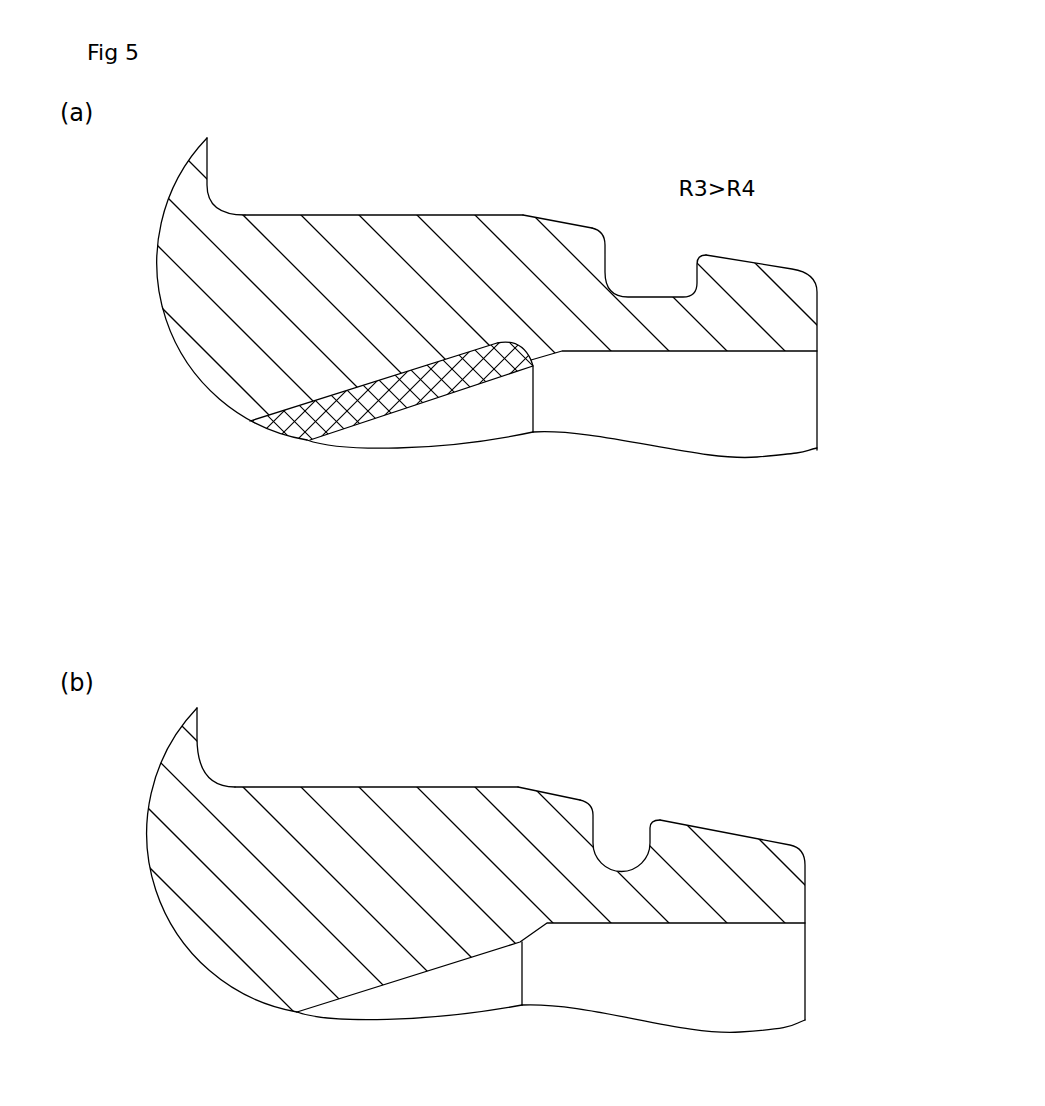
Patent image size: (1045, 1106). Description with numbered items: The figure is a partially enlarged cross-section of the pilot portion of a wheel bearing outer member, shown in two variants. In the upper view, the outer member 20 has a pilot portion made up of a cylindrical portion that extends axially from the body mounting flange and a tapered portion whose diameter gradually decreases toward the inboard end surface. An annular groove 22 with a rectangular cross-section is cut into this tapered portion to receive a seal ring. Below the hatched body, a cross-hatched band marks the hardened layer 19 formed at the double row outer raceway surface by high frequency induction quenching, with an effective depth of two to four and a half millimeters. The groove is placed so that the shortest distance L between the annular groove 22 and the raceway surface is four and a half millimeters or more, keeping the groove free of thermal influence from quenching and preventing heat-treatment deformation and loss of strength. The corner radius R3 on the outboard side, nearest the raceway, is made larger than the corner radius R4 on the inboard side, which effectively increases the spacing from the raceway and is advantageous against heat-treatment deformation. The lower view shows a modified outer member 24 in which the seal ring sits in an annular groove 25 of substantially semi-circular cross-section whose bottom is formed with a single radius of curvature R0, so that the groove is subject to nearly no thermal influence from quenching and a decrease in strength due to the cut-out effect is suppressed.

The outer member 20 is at (202, 334).
The annular groove 22 is at (663, 298).
The hardened layer 19 is at (287, 422).
The outer member 24 is at (207, 905).
The annular groove 25 is at (630, 866).
The shortest distance L is at (588, 249).
The corner R of the outboard side R3 is at (653, 250).
The corner R of the inboard side R4 is at (686, 291).
The single radius of curvature R0 is at (609, 852).